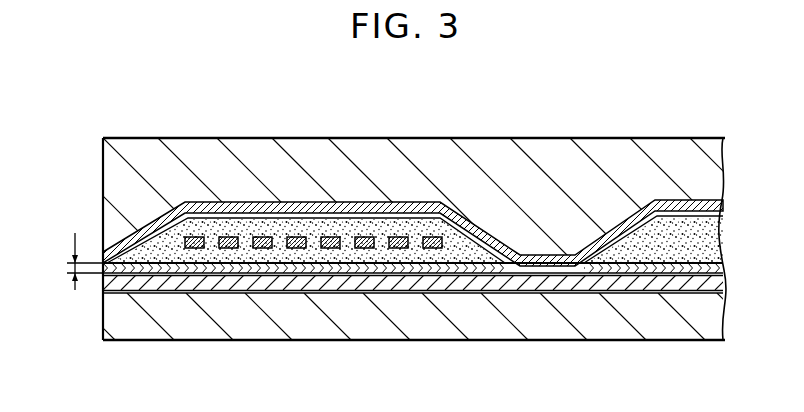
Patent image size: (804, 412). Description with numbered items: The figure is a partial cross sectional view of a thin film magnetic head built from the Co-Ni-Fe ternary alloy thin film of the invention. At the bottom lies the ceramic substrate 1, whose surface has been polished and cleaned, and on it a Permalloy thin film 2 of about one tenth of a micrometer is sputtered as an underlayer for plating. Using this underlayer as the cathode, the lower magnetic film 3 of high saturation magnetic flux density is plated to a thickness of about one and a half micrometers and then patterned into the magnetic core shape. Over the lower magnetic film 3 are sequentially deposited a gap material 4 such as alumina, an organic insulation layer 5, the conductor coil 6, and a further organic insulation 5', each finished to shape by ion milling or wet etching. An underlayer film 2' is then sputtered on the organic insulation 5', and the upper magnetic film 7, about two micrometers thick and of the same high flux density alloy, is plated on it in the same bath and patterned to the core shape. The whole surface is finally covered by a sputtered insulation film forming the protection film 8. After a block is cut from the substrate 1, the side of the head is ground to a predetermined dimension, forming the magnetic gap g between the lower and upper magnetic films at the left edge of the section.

The ceramic substrate 1 is at (477, 330).
The Permalloy thin film 2 is at (413, 339).
The underlayer film 2' is at (415, 176).
The lower magnetic film 3 is at (722, 282).
The gap material 4 is at (270, 273).
The organic insulation layer 5 is at (673, 240).
The organic insulation 5' is at (307, 176).
The conductor coil 6 is at (197, 236).
The upper magnetic film 7 is at (726, 205).
The protection film 8 is at (562, 148).
The magnetic gap g is at (70, 261).